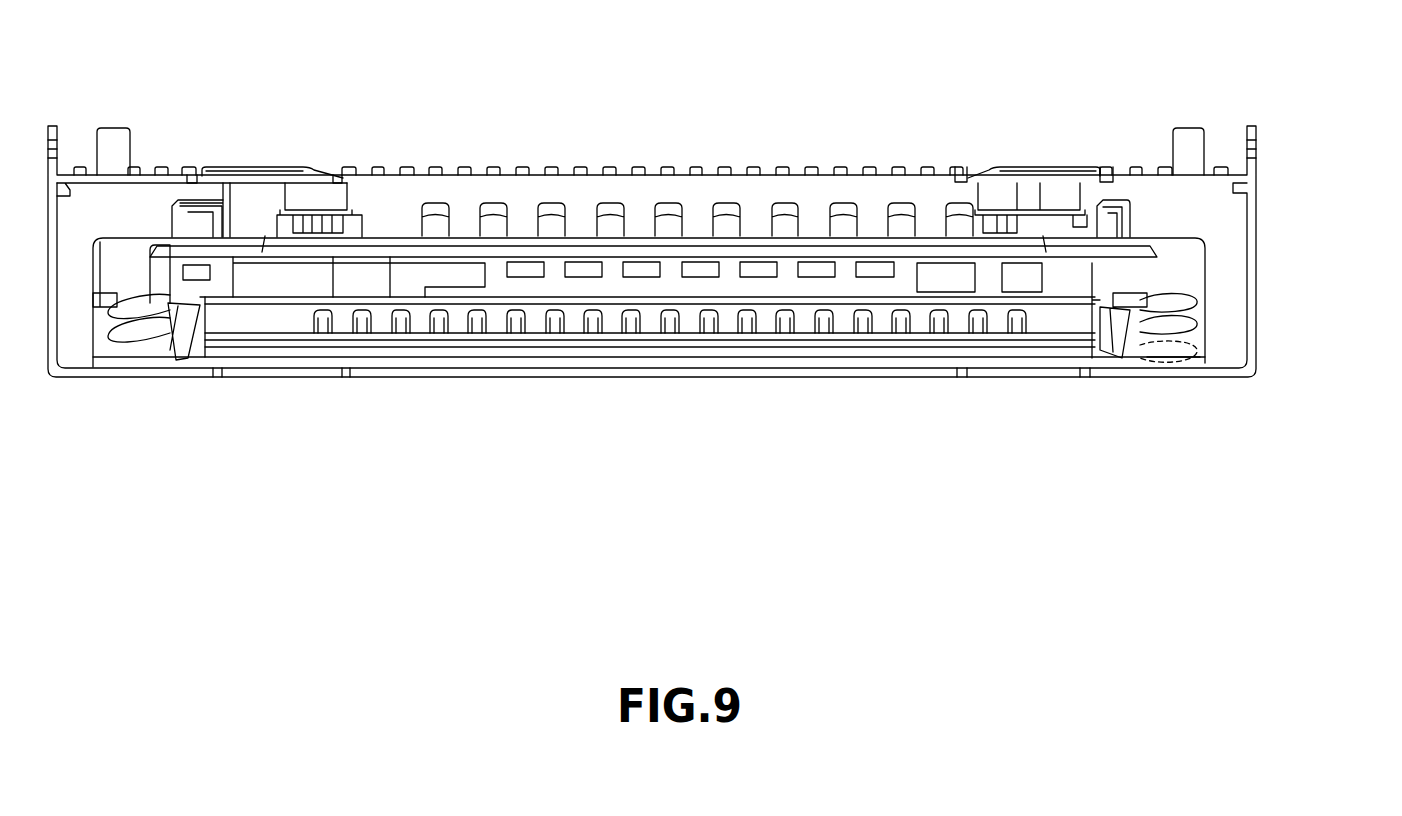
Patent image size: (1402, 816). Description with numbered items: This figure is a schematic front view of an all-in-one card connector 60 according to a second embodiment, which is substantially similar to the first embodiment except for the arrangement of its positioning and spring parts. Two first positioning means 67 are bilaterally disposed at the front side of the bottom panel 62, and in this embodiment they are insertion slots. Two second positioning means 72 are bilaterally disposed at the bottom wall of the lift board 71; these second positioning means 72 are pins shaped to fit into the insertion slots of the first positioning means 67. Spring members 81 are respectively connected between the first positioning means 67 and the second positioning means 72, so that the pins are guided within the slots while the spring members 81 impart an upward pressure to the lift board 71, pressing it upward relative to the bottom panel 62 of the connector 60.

The all-in-one card connector 60 is at (200, 432).
The bottom panel 62 is at (388, 380).
The lift board 71 is at (638, 233).
The second positioning means 72 is at (1195, 306).
The spring members 81 is at (1180, 325).
The first positioning means 67 is at (1200, 350).